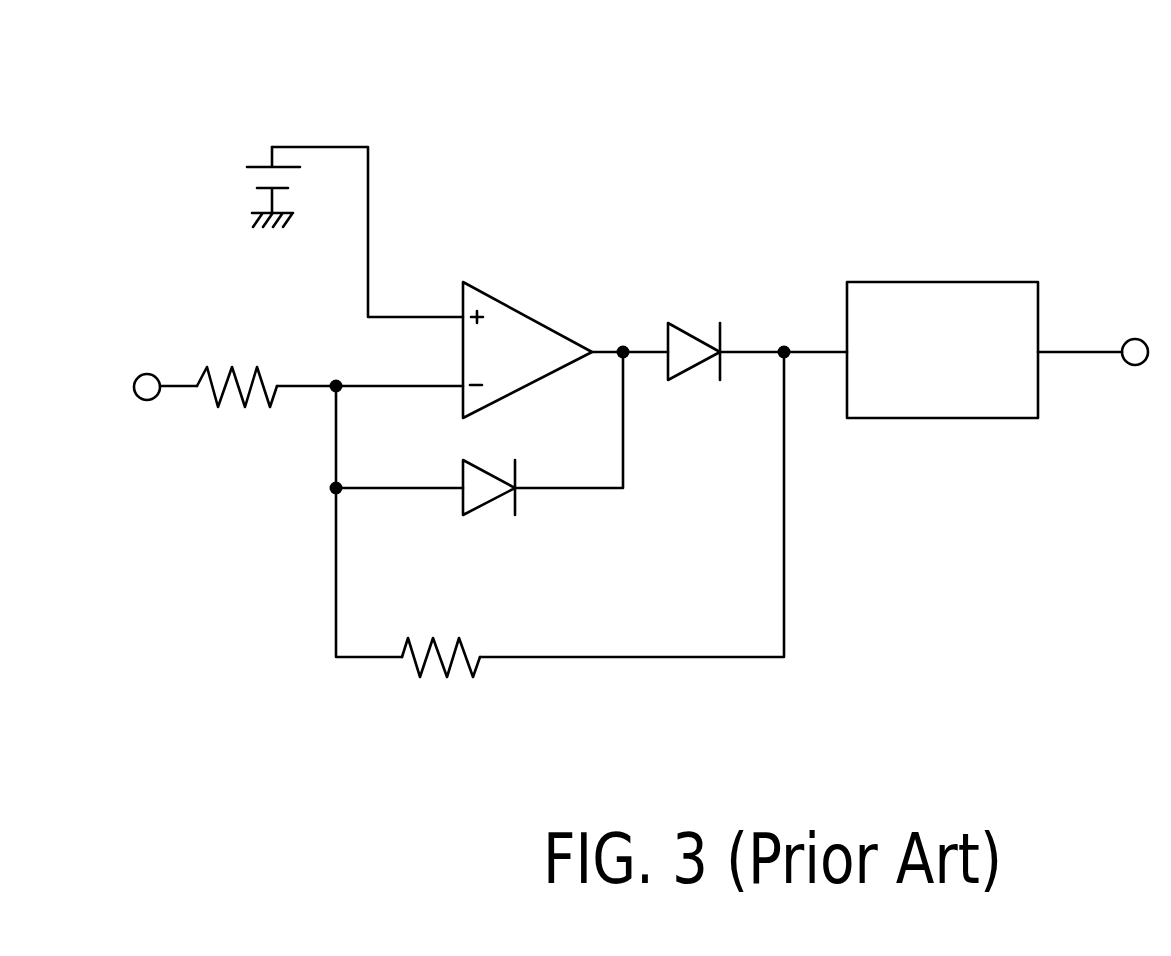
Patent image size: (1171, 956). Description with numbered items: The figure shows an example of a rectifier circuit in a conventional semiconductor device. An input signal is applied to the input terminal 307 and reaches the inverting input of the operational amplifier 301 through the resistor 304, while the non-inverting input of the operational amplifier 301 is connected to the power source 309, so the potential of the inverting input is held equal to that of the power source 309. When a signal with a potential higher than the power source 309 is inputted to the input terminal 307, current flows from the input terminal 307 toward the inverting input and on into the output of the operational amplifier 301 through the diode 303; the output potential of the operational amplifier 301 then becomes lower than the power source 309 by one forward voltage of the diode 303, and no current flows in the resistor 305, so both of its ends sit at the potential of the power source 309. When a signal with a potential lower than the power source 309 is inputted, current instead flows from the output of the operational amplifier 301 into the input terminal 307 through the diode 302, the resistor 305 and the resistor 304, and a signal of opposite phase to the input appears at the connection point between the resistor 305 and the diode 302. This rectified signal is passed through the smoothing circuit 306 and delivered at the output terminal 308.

The operational amplifier 301 is at (508, 282).
The diode 302 is at (702, 316).
The diode 303 is at (495, 510).
The resistor 304 is at (262, 414).
The resistor 305 is at (435, 672).
The smoothing circuit 306 is at (942, 350).
The input terminal 307 is at (148, 372).
The output terminal 308 is at (1115, 368).
The power source 309 is at (243, 166).